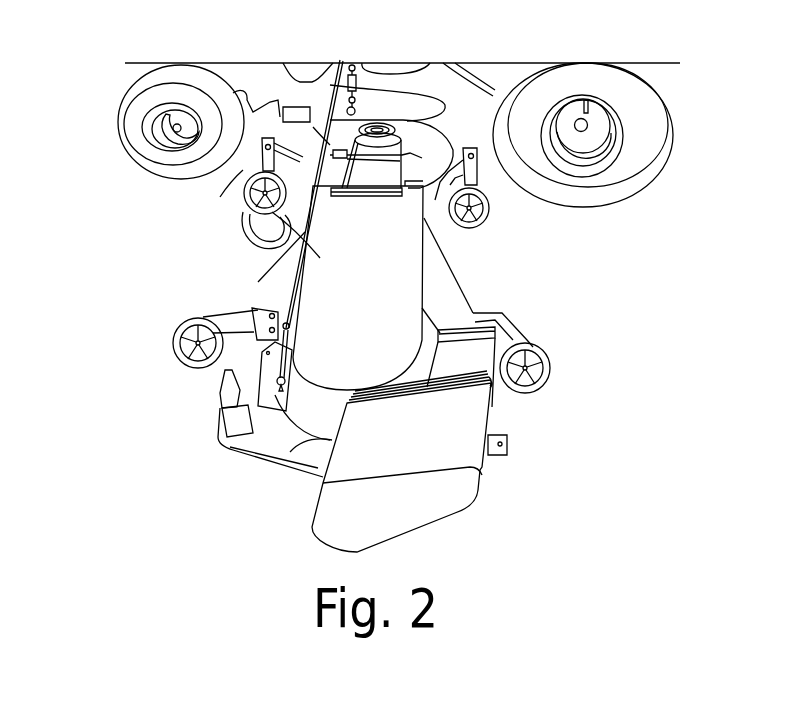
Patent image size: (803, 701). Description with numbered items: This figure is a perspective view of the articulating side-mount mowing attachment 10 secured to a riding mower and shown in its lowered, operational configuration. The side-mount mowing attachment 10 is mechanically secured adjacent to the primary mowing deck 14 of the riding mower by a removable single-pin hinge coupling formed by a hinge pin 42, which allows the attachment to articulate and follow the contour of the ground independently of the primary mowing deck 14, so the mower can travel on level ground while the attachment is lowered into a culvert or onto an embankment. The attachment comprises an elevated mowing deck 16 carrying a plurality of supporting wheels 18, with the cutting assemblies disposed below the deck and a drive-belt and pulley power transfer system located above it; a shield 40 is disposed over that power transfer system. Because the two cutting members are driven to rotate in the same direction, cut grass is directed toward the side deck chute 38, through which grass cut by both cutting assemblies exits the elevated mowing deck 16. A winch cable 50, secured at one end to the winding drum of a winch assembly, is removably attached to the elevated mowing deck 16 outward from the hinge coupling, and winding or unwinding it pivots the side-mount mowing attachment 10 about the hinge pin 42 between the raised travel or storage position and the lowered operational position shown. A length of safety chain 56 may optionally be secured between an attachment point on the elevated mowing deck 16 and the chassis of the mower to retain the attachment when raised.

The side-mount mowing attachment 10 is at (247, 280).
The primary mowing deck 14 is at (503, 224).
The elevated mowing deck 16 is at (477, 293).
The supporting wheels 18 is at (188, 360).
The side deck chute 38 is at (480, 490).
The shield 40 is at (371, 342).
The hinge pin 42 is at (262, 168).
The winch cable 50 is at (296, 268).
The safety chain 56 is at (375, 66).